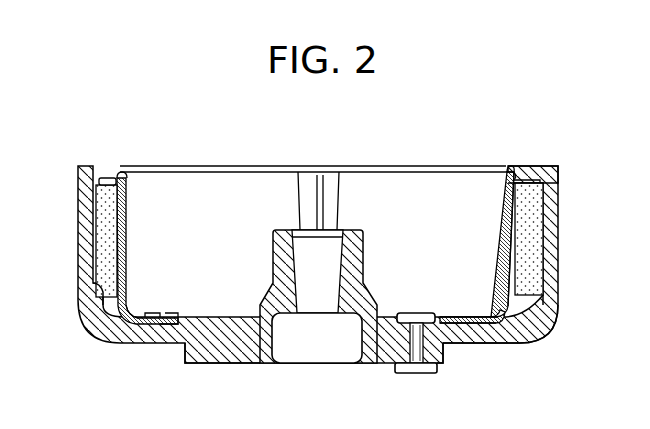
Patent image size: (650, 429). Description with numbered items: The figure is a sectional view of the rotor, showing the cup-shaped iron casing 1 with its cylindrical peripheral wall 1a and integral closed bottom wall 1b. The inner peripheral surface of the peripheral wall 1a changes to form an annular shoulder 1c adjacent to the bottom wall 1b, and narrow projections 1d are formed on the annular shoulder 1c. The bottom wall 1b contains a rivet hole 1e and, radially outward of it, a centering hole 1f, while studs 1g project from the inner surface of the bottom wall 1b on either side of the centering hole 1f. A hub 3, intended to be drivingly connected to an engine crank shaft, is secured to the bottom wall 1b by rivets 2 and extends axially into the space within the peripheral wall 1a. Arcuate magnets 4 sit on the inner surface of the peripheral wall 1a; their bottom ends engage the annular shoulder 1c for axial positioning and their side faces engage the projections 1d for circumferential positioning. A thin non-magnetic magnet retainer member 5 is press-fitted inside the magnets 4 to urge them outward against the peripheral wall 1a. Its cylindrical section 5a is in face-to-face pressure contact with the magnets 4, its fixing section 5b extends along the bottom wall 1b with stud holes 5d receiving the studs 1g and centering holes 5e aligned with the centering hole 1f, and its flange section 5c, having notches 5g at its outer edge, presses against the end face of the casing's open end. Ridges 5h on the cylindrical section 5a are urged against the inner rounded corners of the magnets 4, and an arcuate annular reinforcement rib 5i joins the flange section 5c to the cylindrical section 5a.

The casing 1 is at (562, 254).
The cylindrical peripheral wall 1a is at (555, 190).
The bottom wall 1b is at (173, 332).
The annular shoulder 1c is at (545, 300).
The projections 1d is at (90, 292).
The rivet hole 1e is at (441, 352).
The centering hole 1f is at (486, 343).
The studs 1g is at (160, 325).
The rivets 2 is at (412, 348).
The hub 3 is at (258, 350).
The magnets 4 is at (105, 228).
The magnet retainer member 5 is at (105, 318).
The cylindrical section 5a is at (514, 207).
The fixing section 5b is at (175, 328).
The flange section 5c is at (538, 181).
The stud holes 5d is at (127, 336).
The centering holes 5e is at (478, 326).
The notches 5g is at (108, 180).
The ridges 5h is at (328, 185).
The annular reinforcement rib 5i is at (517, 176).